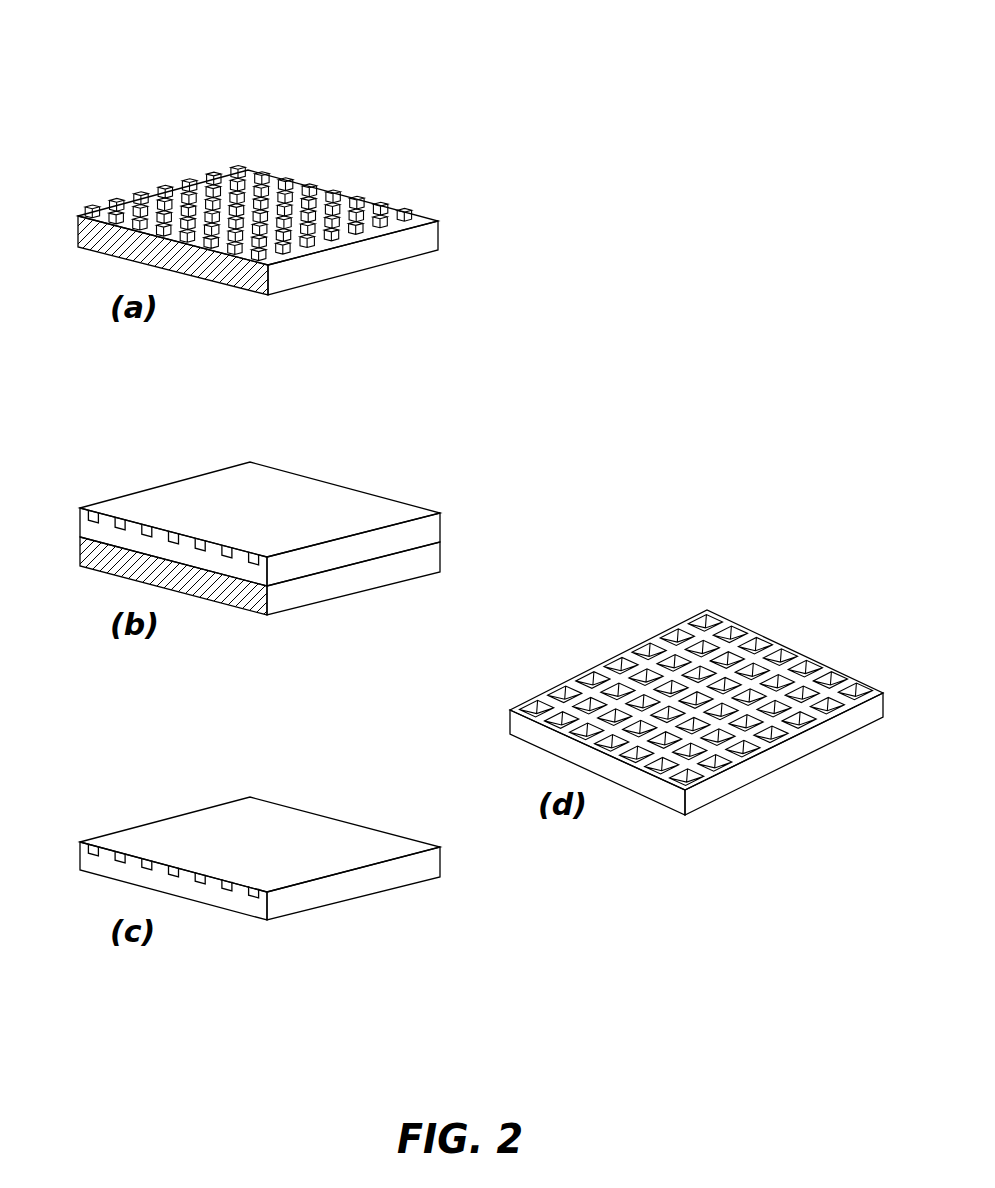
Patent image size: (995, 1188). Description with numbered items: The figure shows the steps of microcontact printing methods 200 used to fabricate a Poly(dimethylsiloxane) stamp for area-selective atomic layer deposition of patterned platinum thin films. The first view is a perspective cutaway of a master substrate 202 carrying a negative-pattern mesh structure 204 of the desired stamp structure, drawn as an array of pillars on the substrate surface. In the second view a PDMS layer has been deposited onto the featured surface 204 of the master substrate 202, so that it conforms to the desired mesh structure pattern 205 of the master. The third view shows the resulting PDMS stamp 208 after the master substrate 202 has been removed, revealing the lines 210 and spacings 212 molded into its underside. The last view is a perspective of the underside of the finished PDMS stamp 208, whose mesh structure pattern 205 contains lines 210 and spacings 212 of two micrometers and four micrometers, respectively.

The microcontact printing methods 200 is at (120, 78).
The master substrate 202 is at (440, 221).
The mesh structure 204 is at (322, 160).
The mesh structure pattern 205 is at (732, 597).
The PDMS stamp 208 is at (333, 819).
The lines 210 is at (100, 548).
The spacings 212 is at (121, 538).